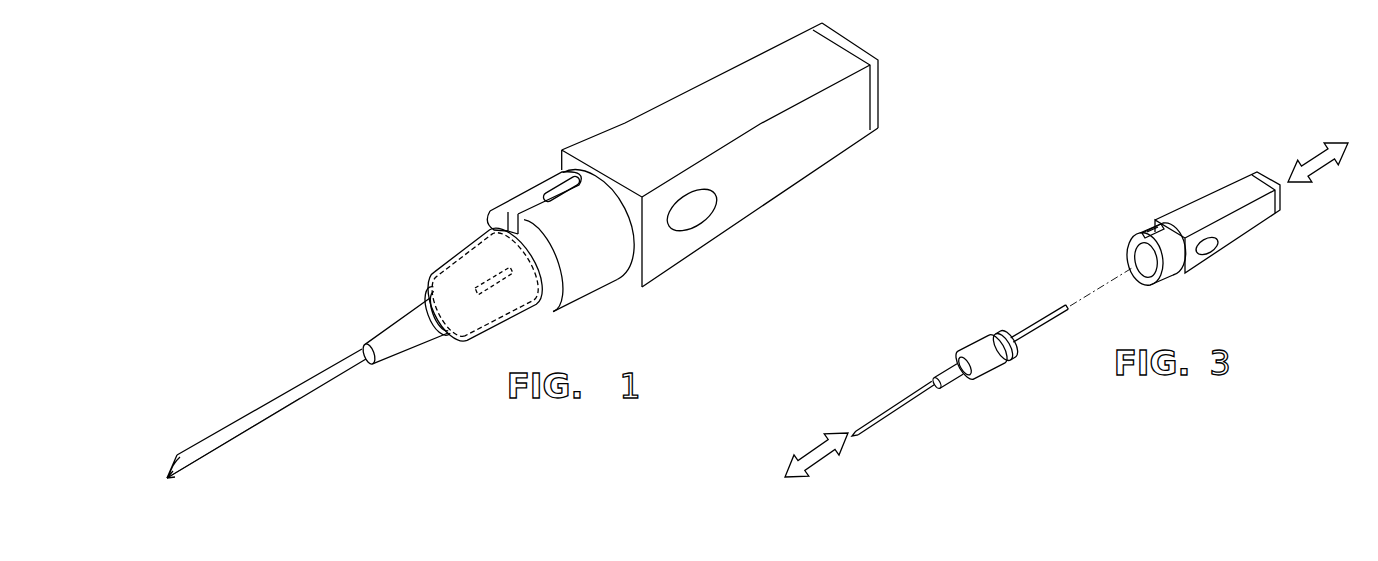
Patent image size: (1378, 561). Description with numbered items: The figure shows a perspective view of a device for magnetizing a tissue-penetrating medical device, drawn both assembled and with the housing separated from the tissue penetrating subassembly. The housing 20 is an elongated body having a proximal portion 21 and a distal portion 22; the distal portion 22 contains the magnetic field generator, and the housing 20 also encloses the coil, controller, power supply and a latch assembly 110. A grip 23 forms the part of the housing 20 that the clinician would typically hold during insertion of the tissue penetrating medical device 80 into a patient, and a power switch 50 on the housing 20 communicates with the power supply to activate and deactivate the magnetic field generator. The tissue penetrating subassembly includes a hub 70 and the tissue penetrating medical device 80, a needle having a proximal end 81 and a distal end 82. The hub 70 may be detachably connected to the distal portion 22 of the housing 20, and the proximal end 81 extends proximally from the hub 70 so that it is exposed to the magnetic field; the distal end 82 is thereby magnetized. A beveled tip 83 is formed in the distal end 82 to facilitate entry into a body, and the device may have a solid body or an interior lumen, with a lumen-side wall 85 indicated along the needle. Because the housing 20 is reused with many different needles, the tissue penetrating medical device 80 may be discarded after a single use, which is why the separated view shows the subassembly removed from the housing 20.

In FIG. 1, the housing 20 is at (682, 157).
In FIG. 3, the housing 20 is at (1201, 218).
In FIG. 1, the proximal portion 21 is at (797, 40).
In FIG. 1, the distal portion 22 is at (611, 125).
In FIG. 1, the grip 23 is at (805, 155).
In FIG. 1, the power switch 50 is at (700, 215).
In FIG. 3, the power switch 50 is at (1193, 220).
In FIG. 1, the hub 70 is at (525, 310).
In FIG. 3, the hub 70 is at (988, 365).
In FIG. 1, the tissue penetrating medical device 80 is at (245, 413).
In FIG. 3, the tissue penetrating medical device 80 is at (905, 386).
In FIG. 1, the proximal end 81 is at (355, 350).
In FIG. 3, the proximal end 81 is at (1048, 315).
In FIG. 1, the distal end 82 is at (192, 447).
In FIG. 3, the distal end 82 is at (873, 421).
In FIG. 1, the beveled tip 83 is at (168, 475).
In FIG. 1, the needle wall 85 is at (258, 423).
In FIG. 1, the latch assembly 110 is at (558, 190).